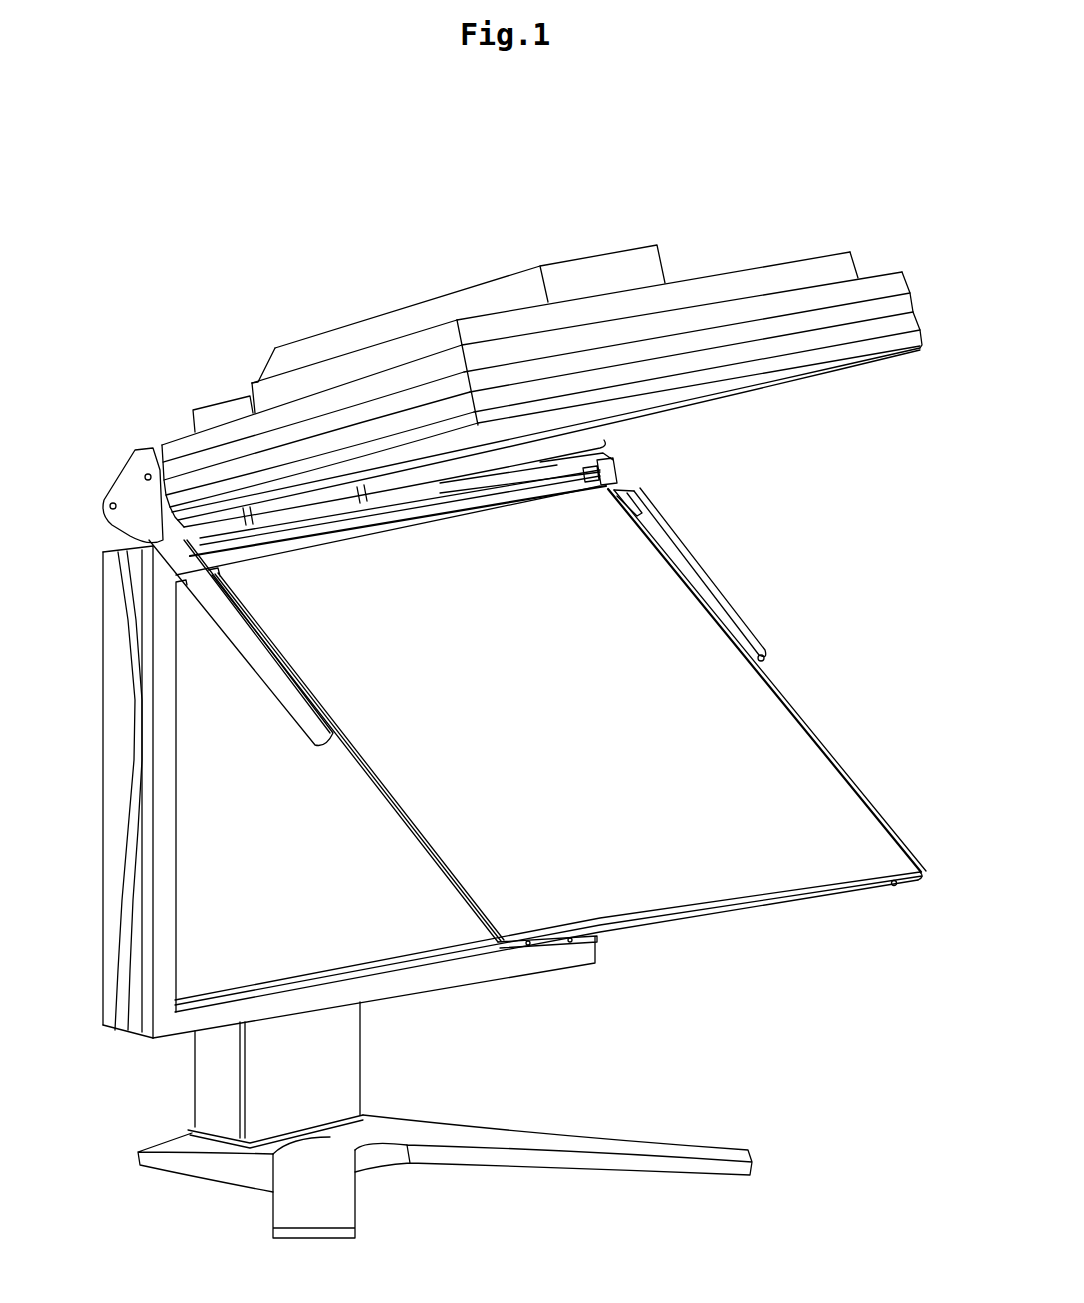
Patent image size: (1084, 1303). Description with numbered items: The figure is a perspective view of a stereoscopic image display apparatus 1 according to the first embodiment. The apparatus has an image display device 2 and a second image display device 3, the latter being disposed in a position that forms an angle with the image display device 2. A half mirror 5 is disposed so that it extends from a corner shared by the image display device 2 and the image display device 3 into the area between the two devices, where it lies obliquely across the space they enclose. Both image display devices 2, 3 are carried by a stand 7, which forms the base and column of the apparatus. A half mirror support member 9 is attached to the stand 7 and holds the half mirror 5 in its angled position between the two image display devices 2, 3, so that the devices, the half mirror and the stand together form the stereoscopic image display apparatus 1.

The stereoscopic image display apparatus 1 is at (770, 1023).
The image display device 2 is at (473, 975).
The image display device 3 is at (822, 270).
The half mirror 5 is at (762, 708).
The stand 7 is at (355, 1080).
The half mirror support member 9 is at (118, 487).